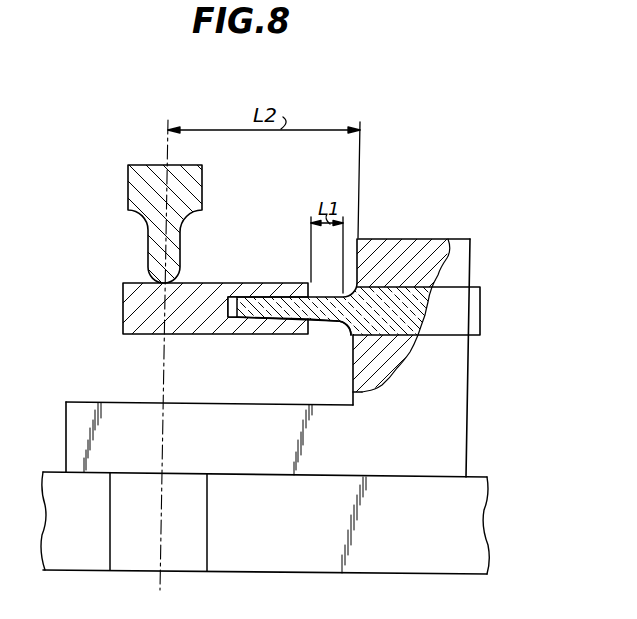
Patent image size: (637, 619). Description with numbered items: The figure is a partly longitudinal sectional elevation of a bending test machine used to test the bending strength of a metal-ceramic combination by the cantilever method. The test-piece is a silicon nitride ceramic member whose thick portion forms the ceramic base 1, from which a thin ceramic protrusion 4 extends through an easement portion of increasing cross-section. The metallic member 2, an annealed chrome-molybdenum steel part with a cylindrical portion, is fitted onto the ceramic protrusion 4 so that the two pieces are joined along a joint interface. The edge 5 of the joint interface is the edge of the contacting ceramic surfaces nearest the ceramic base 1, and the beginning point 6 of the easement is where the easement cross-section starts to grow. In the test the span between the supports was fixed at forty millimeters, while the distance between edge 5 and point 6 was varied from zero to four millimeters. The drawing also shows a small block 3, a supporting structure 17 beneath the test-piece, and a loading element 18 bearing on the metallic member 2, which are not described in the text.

The ceramic base 1 is at (475, 302).
The metallic member 2 is at (123, 312).
The projection 3 is at (214, 326).
The ceramic protrusion 4 is at (257, 316).
The edge of joint interface 5 is at (311, 324).
The beginning point of the easement 6 is at (338, 322).
The base 17 is at (455, 423).
The pin 18 is at (138, 218).